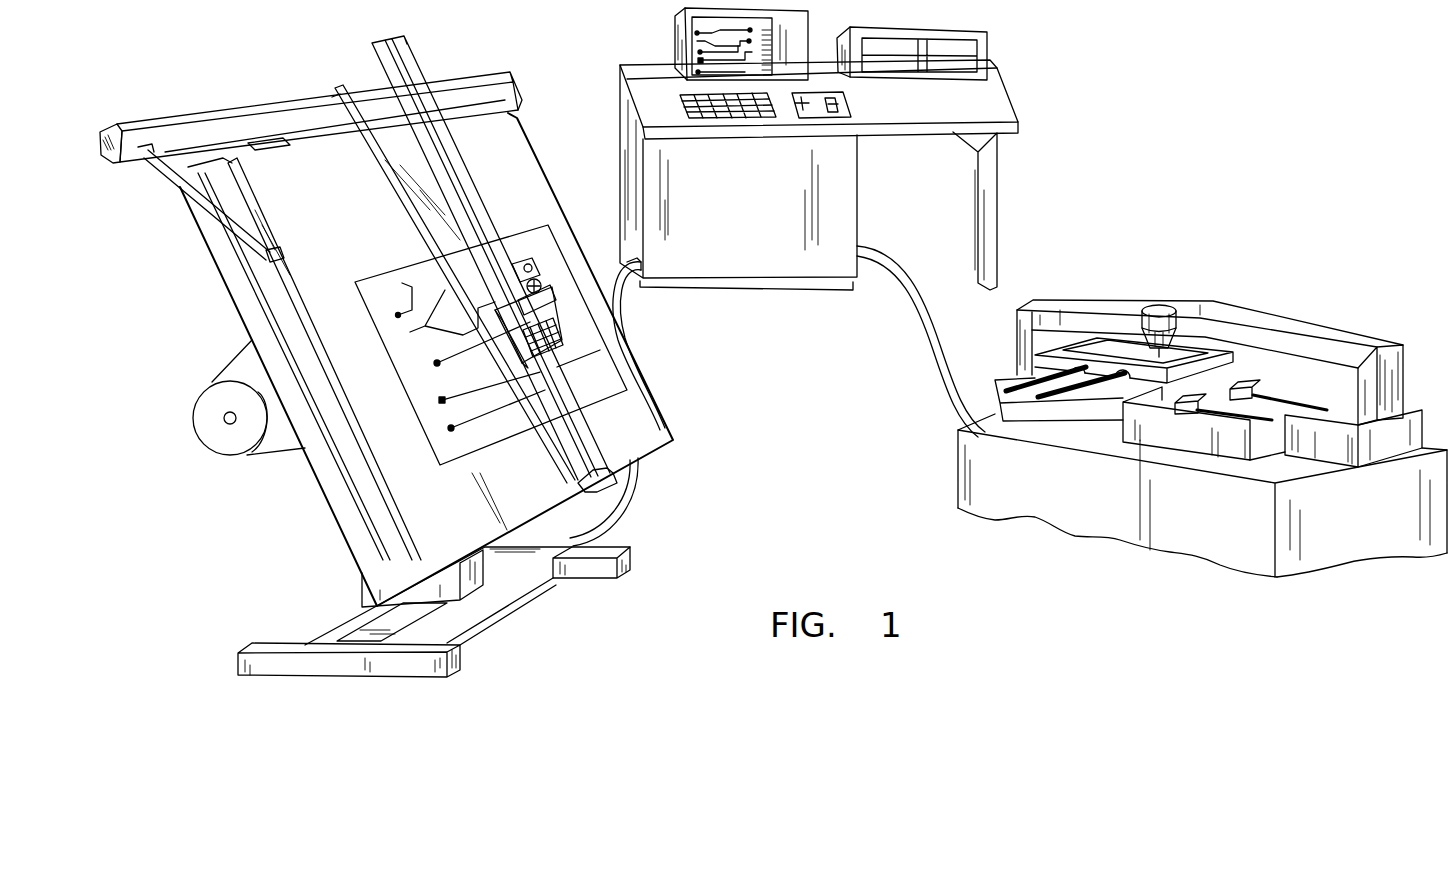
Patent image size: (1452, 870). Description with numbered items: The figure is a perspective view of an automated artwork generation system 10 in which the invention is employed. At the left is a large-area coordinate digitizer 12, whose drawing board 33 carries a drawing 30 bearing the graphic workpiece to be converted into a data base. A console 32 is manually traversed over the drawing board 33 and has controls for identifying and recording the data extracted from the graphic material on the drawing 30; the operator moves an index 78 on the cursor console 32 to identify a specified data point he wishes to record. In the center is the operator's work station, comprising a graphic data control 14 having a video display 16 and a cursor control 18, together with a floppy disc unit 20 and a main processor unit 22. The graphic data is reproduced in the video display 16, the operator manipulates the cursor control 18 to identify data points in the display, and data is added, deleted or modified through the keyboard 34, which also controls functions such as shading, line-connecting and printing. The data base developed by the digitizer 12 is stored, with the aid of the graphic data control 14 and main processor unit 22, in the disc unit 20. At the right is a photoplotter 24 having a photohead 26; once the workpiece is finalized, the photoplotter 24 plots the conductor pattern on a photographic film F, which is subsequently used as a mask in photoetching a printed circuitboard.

The digitizing and machining system 10 is at (1089, 84).
The coordinate digitizer 12 is at (479, 58).
The graphic data control 14 is at (820, 28).
The video display 16 is at (697, 33).
The cursor control 18 is at (838, 104).
The floppy disc unit 20 is at (942, 26).
The main processor unit 22 is at (861, 218).
The photoplotter 24 is at (1298, 310).
The photohead 26 is at (1145, 305).
The drawing 30 is at (372, 308).
The console 32 is at (563, 308).
The drawing board 33 is at (530, 165).
The keyboard 34 is at (687, 108).
The index 78 is at (537, 279).
The photographic film F is at (1099, 348).